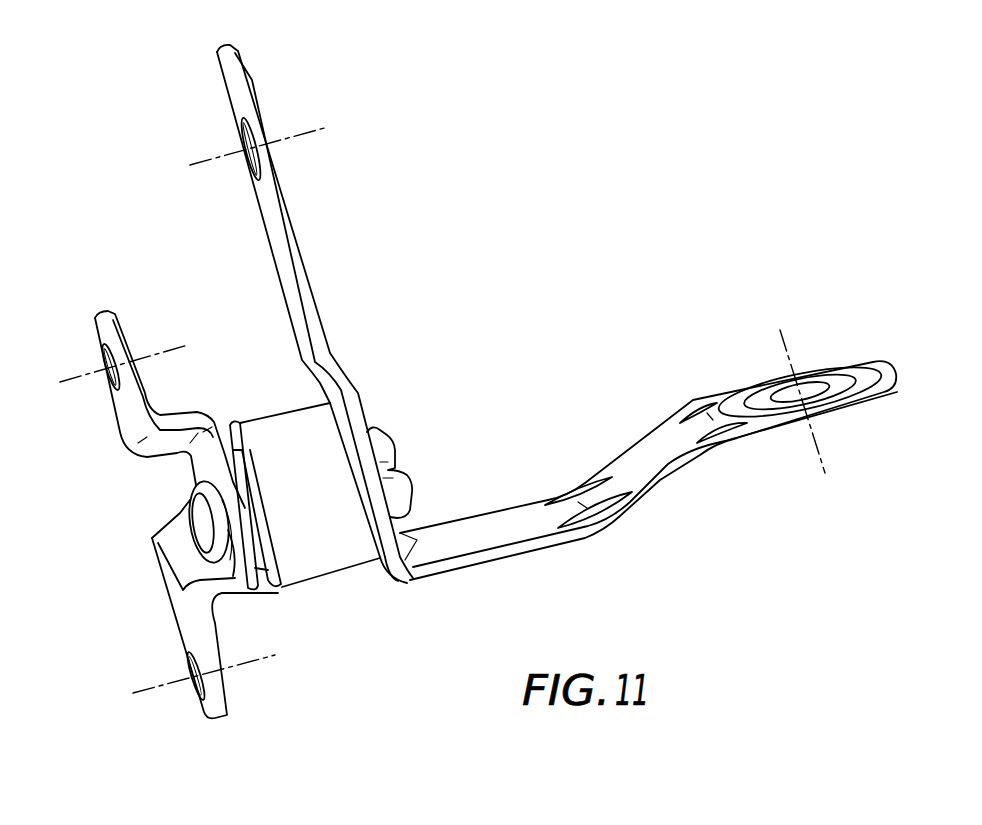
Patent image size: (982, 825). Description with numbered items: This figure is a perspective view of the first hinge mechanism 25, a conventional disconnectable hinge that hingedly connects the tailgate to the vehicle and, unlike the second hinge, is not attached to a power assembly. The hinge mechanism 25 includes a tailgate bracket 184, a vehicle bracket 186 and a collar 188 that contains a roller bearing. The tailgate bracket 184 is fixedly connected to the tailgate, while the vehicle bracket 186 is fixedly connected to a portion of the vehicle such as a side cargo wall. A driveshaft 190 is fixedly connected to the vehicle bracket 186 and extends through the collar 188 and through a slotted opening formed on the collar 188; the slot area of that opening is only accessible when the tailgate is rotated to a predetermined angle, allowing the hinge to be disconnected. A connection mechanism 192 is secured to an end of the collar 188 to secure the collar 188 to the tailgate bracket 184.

The first hinge mechanism 25 is at (628, 180).
The tailgate bracket 184 is at (320, 255).
The vehicle bracket 186 is at (108, 436).
The collar 188 is at (331, 577).
The driveshaft 190 is at (231, 578).
The connection mechanism 192 is at (397, 458).